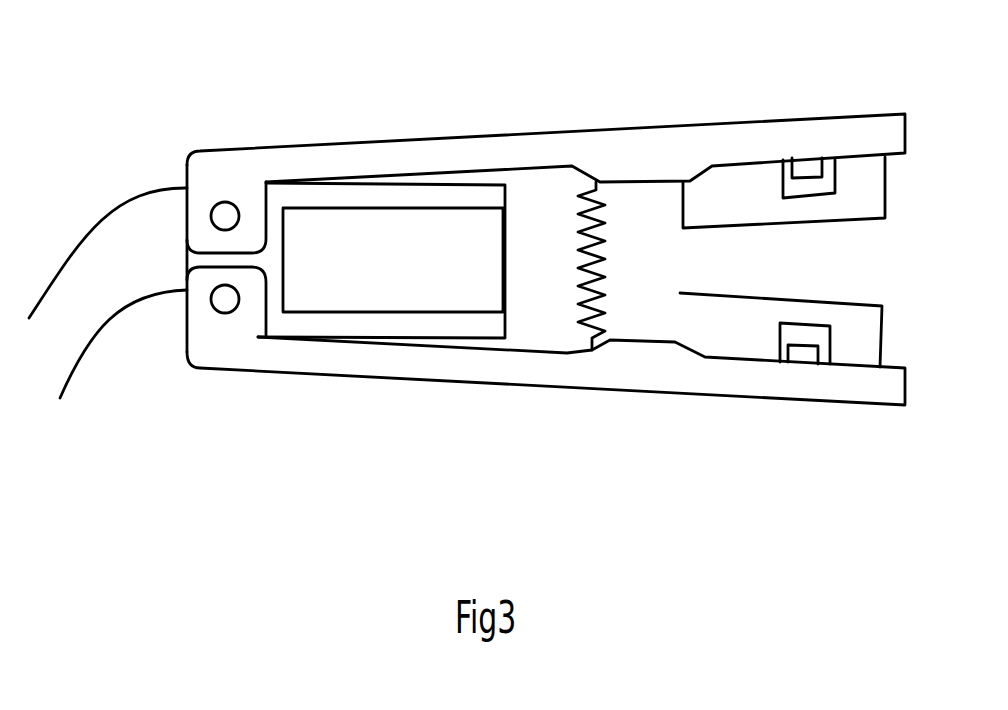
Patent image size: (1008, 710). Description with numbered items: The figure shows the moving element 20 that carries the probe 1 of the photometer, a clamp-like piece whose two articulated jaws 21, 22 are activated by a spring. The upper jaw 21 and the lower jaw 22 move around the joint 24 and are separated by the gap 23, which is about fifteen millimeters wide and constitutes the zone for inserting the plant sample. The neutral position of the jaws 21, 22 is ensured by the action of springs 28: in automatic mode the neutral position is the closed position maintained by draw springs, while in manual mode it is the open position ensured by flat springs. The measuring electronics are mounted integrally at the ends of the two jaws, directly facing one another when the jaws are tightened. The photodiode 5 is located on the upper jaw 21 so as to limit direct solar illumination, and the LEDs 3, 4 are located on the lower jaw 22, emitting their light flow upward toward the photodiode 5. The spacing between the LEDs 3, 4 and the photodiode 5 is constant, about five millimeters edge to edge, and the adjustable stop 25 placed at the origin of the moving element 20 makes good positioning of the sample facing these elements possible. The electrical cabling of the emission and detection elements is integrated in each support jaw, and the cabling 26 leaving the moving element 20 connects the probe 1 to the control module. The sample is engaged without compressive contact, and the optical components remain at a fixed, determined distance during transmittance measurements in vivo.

The probe 1 is at (760, 244).
The LED 3 is at (826, 412).
The LED 4 is at (818, 338).
The photodiode 5 is at (823, 187).
The moving element 20 is at (546, 244).
The upper jaw 21 is at (557, 133).
The lower jaw 22 is at (552, 392).
The gap 23 is at (827, 268).
The joint 24 is at (226, 301).
The adjustable stop 25 is at (363, 324).
The cabling 26 is at (115, 190).
The springs 28 is at (600, 192).